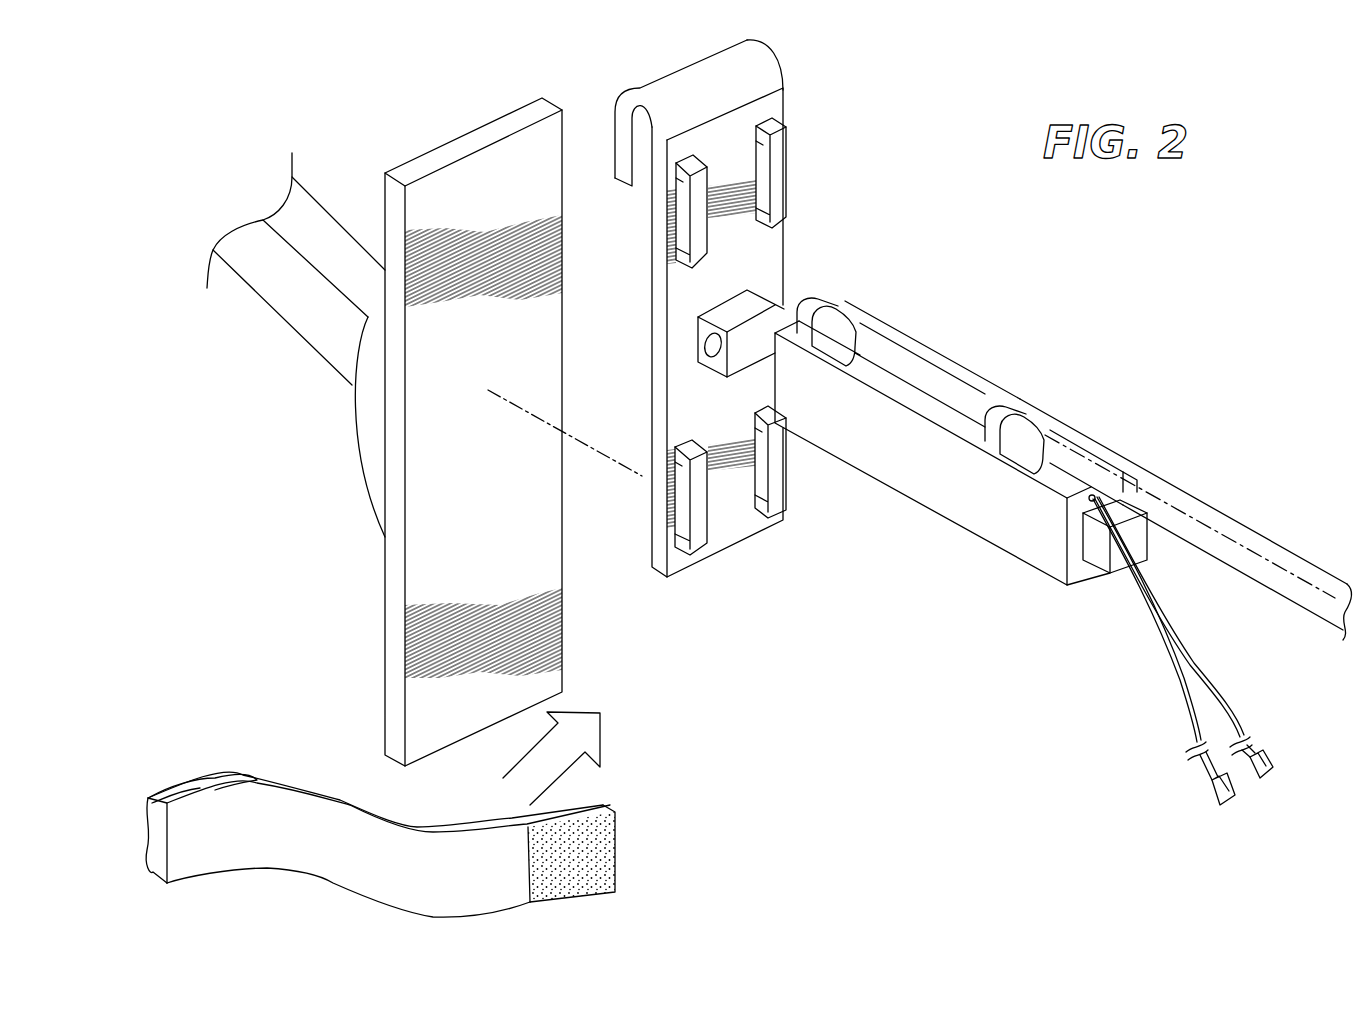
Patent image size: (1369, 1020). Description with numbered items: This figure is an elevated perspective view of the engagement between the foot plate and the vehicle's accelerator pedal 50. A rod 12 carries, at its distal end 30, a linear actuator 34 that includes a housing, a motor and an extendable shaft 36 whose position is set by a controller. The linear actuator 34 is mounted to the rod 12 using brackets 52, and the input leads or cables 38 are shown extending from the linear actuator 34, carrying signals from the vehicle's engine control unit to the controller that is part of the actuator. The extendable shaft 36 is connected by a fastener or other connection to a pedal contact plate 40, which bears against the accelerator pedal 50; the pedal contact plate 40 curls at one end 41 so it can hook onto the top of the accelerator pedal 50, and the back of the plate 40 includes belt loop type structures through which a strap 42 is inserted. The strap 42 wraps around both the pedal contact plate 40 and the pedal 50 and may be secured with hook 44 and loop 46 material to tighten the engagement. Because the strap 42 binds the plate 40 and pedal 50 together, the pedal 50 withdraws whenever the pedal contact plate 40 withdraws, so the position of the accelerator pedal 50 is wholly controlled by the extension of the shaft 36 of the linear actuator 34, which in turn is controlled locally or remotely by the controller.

The rod 12 is at (1235, 545).
The distal end 30 is at (947, 383).
The linear actuator 34 is at (977, 503).
The extendable shaft 36 is at (755, 315).
The cables 38 is at (1197, 683).
The pedal contact plate 40 is at (780, 105).
The curled end 41 is at (737, 57).
The strap 42 is at (348, 805).
The hook material 44 is at (590, 860).
The loop material 46 is at (190, 780).
The accelerator pedal 50 is at (440, 148).
The brackets 52 is at (850, 323).